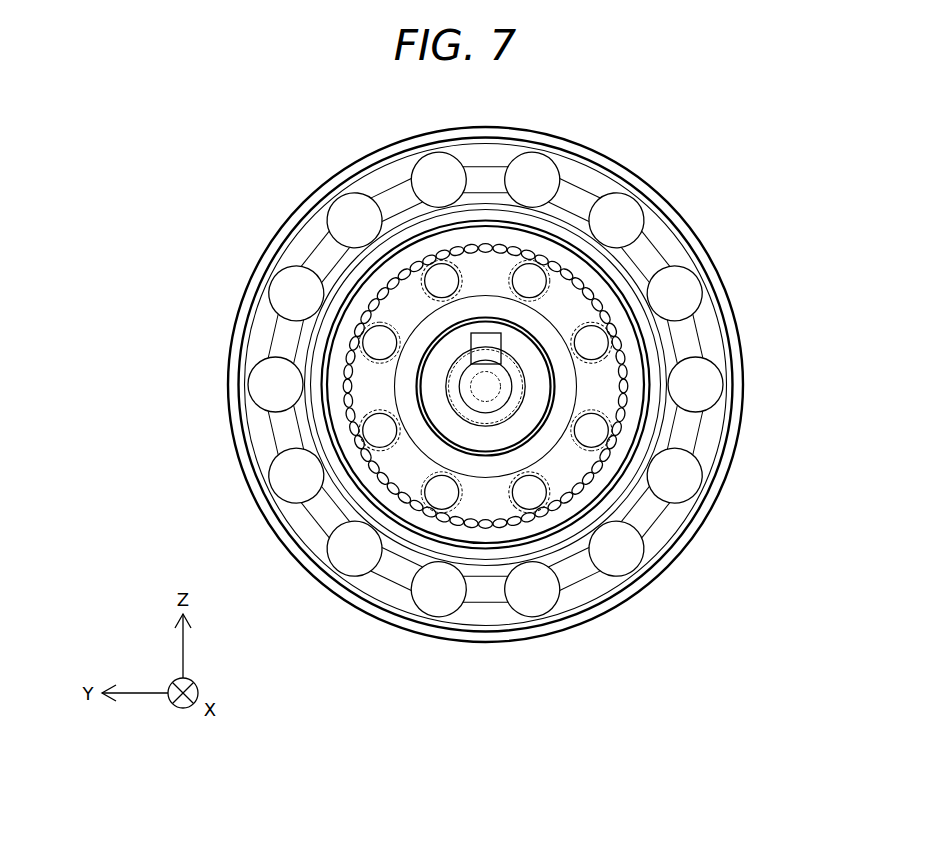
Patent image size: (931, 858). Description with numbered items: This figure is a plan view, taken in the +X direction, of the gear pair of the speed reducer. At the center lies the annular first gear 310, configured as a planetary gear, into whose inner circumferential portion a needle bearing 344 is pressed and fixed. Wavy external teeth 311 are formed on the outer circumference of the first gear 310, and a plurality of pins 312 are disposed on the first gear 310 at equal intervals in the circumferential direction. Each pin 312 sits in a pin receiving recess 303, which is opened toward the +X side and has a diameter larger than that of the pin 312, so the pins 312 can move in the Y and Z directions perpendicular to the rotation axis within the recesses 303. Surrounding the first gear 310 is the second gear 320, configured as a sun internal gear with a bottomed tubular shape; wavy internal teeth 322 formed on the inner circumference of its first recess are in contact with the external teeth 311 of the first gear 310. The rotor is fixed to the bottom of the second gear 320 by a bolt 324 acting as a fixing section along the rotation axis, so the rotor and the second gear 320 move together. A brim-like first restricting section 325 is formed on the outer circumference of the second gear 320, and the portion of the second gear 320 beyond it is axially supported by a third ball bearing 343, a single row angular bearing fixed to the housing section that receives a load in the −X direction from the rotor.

The pin receiving recess 303 is at (620, 437).
The first gear 310 is at (347, 403).
The external teeth 311 is at (372, 297).
The pin 312 is at (528, 274).
The second gear 320 is at (487, 235).
The internal teeth 322 is at (350, 333).
The bolt 324 is at (485, 393).
The first restricting section 325 is at (710, 262).
The third ball bearing 343 is at (675, 485).
The needle bearing 344 is at (423, 435).